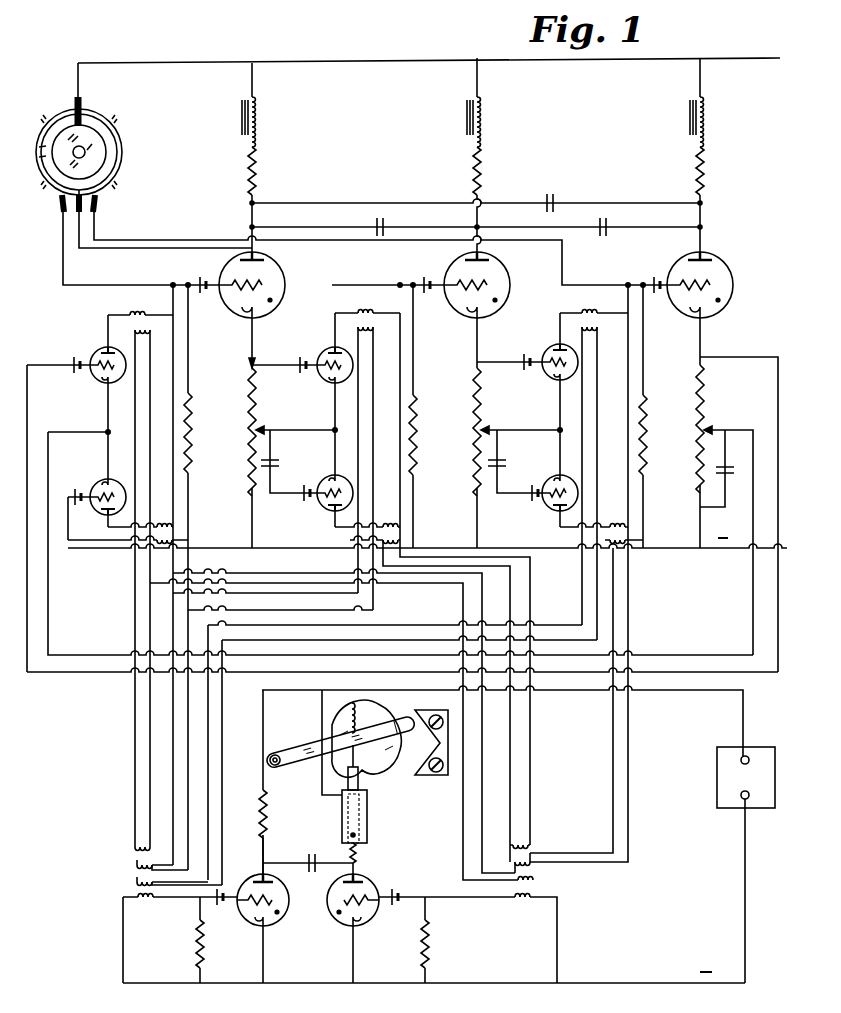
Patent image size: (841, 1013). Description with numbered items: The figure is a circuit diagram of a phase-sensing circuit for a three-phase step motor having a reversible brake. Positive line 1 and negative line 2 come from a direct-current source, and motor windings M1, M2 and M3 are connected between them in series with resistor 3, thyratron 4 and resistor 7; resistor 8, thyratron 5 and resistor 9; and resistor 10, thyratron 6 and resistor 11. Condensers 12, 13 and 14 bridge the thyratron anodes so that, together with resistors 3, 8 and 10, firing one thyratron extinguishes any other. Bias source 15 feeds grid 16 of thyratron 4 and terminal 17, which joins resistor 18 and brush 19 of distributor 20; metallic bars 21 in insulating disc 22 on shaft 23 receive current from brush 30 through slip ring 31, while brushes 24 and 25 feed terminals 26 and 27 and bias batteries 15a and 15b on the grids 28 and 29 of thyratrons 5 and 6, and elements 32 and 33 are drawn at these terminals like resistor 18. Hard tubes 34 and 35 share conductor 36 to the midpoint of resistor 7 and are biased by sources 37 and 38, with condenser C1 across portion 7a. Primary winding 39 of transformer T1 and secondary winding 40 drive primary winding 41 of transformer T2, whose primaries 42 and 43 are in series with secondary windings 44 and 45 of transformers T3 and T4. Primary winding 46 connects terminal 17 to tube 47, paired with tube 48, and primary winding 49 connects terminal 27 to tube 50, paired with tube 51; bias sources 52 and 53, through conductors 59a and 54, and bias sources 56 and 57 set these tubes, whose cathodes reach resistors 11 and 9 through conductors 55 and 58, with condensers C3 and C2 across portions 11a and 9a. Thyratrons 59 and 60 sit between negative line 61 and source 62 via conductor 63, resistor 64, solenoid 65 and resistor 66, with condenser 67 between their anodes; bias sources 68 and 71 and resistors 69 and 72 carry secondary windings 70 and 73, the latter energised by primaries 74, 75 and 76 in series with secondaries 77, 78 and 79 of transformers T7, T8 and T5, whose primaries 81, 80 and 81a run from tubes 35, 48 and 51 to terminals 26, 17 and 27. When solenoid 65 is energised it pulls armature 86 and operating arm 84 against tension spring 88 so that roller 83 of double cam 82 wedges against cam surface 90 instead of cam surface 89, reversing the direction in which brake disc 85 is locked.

The positive line 1 is at (194, 54).
The negative line 2 is at (286, 548).
The resistor 3 is at (262, 162).
The thyratron 4 is at (286, 290).
The thyratron 5 is at (512, 290).
The thyratron 6 is at (735, 272).
The resistor 7 is at (240, 400).
The resistor portion 7a is at (250, 452).
The resistor 8 is at (487, 162).
The resistor 9 is at (468, 410).
The lower portion of resistor 9 9a is at (474, 454).
The resistor 10 is at (710, 158).
The resistor 11 is at (694, 396).
The lower portion of resistor 11 11a is at (700, 455).
The condenser 12 is at (386, 222).
The condenser 13 is at (608, 220).
The condenser 14 is at (556, 198).
The battery or potential source 15 is at (205, 276).
The bias battery 15a is at (429, 276).
The bias battery 15b is at (660, 276).
The grid 16 is at (246, 288).
The terminal 17 is at (172, 282).
The resistor 18 is at (192, 440).
The brush 19 is at (60, 206).
The commutator or distributor 20 is at (130, 146).
The metallic bars 21 is at (108, 122).
The insulating plastic disc 22 is at (106, 172).
The shaft 23 is at (80, 145).
The brush 24 is at (80, 248).
The brush 25 is at (100, 202).
The terminal 26 is at (400, 280).
The terminal 27 is at (626, 280).
The grid 28 is at (470, 286).
The grid 29 is at (694, 286).
The brush 30 is at (84, 96).
The slip ring 31 is at (56, 140).
The resistor 32 is at (420, 448).
The resistor 33 is at (650, 448).
The hard tube 34 is at (322, 348).
The hard tube 35 is at (324, 508).
The conductor 36 is at (335, 406).
The bias source 37 is at (298, 360).
The bias source 38 is at (310, 484).
The primary winding 39 is at (368, 309).
The secondary winding 40 is at (358, 327).
The primary winding 41 is at (134, 864).
The primary winding 42 is at (132, 846).
The primary winding 43 is at (134, 884).
The secondary winding 44 is at (150, 334).
The secondary winding 45 is at (582, 327).
The primary winding 46 is at (140, 311).
The hard tube 47 is at (96, 384).
The hard tube 48 is at (106, 476).
The primary winding 49 is at (590, 309).
The hard tube 50 is at (550, 348).
The hard tube 51 is at (550, 506).
The bias source 52 is at (72, 356).
The bias source 53 is at (78, 490).
The conductor 54 is at (70, 528).
The conductor 55 is at (48, 622).
The bias source 56 is at (526, 366).
The bias source 57 is at (538, 488).
The conductor 58 is at (528, 432).
The thyratron 59 is at (110, 676).
The conductor 59a is at (778, 396).
The thyratron 60 is at (370, 916).
The negative line 61 is at (630, 980).
The direct current power source 62 is at (717, 776).
The conductor 63 is at (700, 690).
The resistor 64 is at (258, 806).
The solenoid 65 is at (370, 820).
The resistor 66 is at (358, 852).
The condenser 67 is at (314, 858).
The bias source 68 is at (216, 908).
The resistor 69 is at (204, 944).
The secondary winding 70 is at (154, 900).
The bias source 71 is at (410, 888).
The resistor 72 is at (430, 940).
The secondary winding 73 is at (528, 902).
The primary winding 74 is at (514, 844).
The primary winding 75 is at (552, 882).
The primary winding 76 is at (534, 856).
The secondary winding 77 is at (400, 544).
The secondary winding 78 is at (176, 544).
The secondary winding 79 is at (628, 540).
The primary winding 80 is at (166, 522).
The primary winding 81 is at (392, 522).
The primary winding 81a is at (618, 522).
The double cam 82 is at (450, 776).
The roller 83 is at (408, 732).
The operating arm 84 is at (318, 744).
The brake disc 85 is at (388, 770).
The armature 86 is at (348, 786).
The tension spring 88 is at (348, 708).
The cam surface 89 is at (434, 714).
The cam surface 90 is at (432, 772).
The condenser C1 is at (272, 452).
The by-pass condenser C2 is at (503, 458).
The by-pass condenser C3 is at (730, 478).
The motor winding M1 is at (262, 110).
The motor winding M2 is at (487, 110).
The motor winding M3 is at (710, 110).
The transformer T1 is at (367, 323).
The transformer T2 is at (118, 882).
The transformer T3 is at (140, 323).
The transformer T4 is at (594, 323).
The transformer T5 is at (630, 512).
The transformer T7 is at (404, 532).
The transformer T8 is at (190, 530).